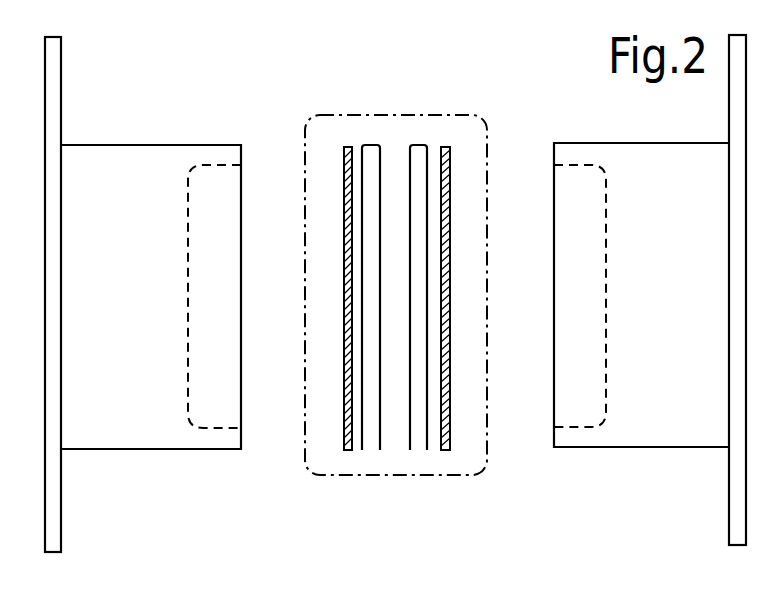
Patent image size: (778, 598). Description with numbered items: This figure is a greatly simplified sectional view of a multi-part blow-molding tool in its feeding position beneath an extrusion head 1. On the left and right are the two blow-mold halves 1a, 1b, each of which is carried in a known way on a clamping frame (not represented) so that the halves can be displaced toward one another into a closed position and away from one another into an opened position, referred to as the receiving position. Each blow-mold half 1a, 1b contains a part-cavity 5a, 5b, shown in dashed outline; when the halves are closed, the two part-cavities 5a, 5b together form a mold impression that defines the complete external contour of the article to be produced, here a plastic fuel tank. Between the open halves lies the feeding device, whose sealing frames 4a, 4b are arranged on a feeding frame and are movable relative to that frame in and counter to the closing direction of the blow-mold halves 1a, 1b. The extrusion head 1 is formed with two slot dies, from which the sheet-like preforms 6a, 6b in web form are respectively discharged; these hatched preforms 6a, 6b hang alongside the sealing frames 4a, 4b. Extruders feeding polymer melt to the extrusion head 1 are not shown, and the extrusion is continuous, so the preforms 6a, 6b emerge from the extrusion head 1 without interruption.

The extrusion head 1 is at (428, 123).
The blow-mold half 1a is at (125, 410).
The blow-mold half 1b is at (655, 403).
The sealing frame 4a is at (370, 442).
The sealing frame 4b is at (418, 442).
The part-cavity 5a is at (190, 320).
The part-cavity 5b is at (606, 300).
The preform 6a is at (348, 423).
The preform 6b is at (447, 417).